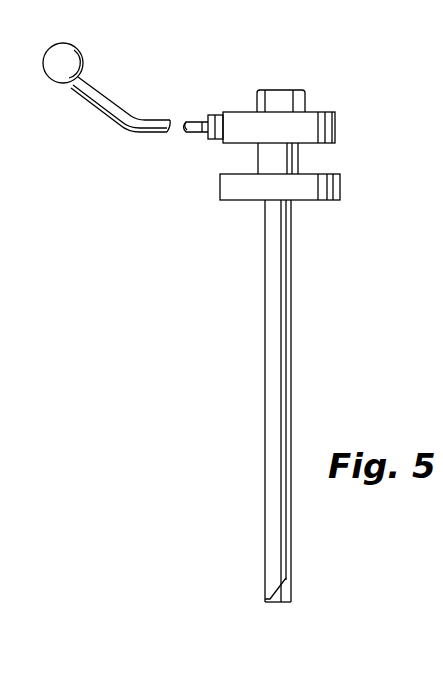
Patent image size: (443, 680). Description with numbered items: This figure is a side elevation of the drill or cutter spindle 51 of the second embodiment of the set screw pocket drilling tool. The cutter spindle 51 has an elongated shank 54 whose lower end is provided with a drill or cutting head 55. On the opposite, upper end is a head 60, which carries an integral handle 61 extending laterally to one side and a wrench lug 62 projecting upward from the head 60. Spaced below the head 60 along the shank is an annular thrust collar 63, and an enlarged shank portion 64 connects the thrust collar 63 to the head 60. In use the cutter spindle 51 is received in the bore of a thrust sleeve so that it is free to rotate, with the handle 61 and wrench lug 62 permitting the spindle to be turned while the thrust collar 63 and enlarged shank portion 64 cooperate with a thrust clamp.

The cutter spindle 51 is at (211, 80).
The shank 54 is at (273, 265).
The cutting head 55 is at (277, 593).
The head 60 is at (328, 124).
The handle 61 is at (96, 103).
The wrench lug 62 is at (275, 98).
The thrust collar 63 is at (232, 185).
The enlarged shank portion 64 is at (283, 158).